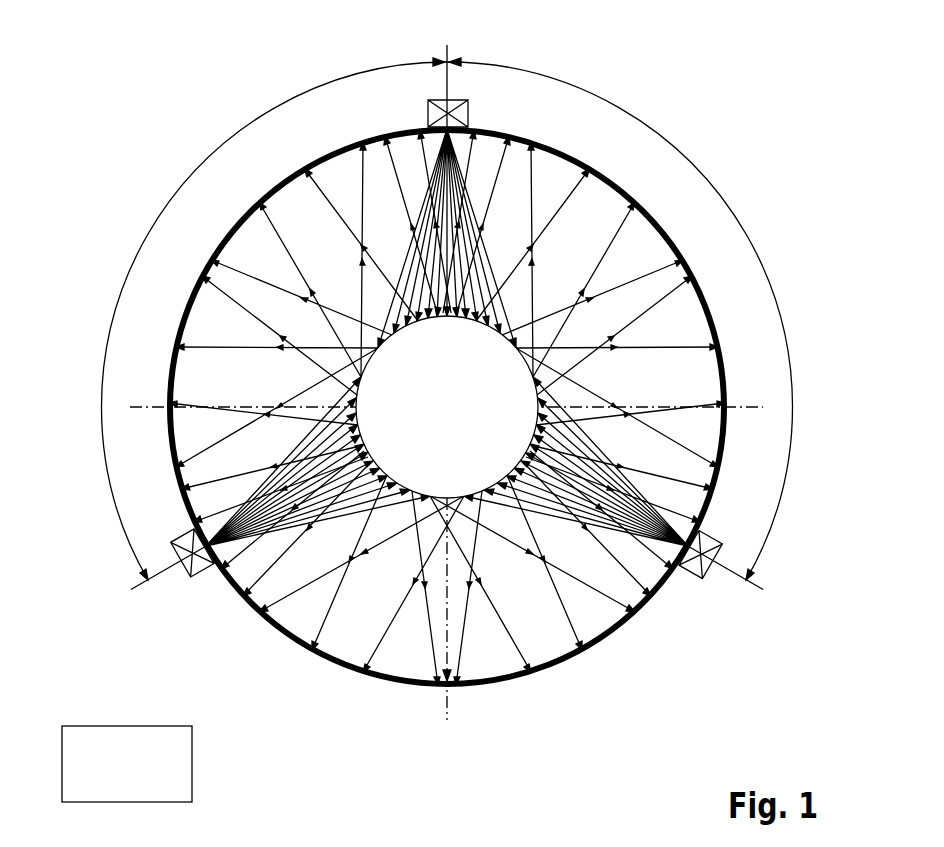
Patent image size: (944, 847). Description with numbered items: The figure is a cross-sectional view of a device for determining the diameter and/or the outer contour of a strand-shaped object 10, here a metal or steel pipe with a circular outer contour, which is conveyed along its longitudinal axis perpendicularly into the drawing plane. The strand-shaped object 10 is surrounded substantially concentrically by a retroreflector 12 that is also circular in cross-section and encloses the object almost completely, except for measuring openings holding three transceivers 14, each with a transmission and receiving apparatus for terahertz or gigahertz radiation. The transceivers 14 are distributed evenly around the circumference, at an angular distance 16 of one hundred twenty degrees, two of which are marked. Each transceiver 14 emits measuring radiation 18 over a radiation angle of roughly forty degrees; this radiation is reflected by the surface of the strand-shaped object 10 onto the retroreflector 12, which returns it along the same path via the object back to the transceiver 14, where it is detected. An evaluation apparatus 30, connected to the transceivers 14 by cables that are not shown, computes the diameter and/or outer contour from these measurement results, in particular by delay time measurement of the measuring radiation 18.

The strand-shaped object 10 is at (695, 333).
The retroreflector 12 is at (608, 170).
The transceiver 14 is at (470, 104).
The angular distance 16 is at (176, 190).
The measuring radiation 18 is at (343, 147).
The evaluation apparatus 30 is at (139, 777).